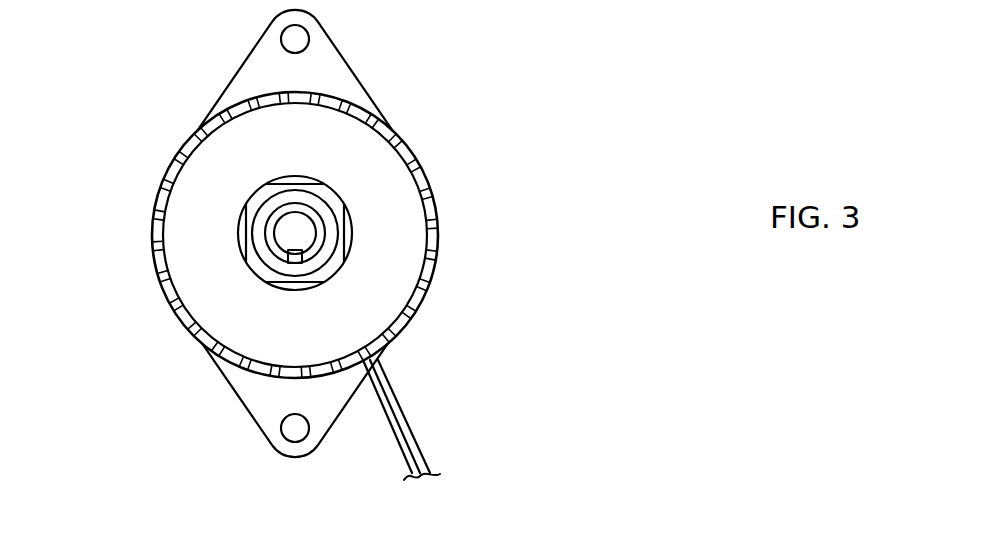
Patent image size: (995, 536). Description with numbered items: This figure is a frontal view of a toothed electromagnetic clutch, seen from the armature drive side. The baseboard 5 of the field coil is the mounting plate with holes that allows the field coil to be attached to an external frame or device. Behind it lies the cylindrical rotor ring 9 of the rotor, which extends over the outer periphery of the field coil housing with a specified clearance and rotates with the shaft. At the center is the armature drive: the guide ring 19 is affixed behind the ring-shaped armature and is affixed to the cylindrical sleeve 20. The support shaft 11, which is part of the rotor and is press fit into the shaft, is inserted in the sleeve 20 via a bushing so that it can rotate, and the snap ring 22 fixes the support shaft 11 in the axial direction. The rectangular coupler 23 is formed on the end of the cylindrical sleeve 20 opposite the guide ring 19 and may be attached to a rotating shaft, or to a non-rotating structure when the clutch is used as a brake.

The baseboard 5 is at (345, 82).
The cylindrical rotor ring 9 is at (433, 283).
The support shaft 11 is at (293, 232).
The guide ring 19 is at (390, 193).
The cylindrical sleeve 20 is at (258, 270).
The snap ring 22 is at (330, 190).
The rectangular coupler 23 is at (247, 235).